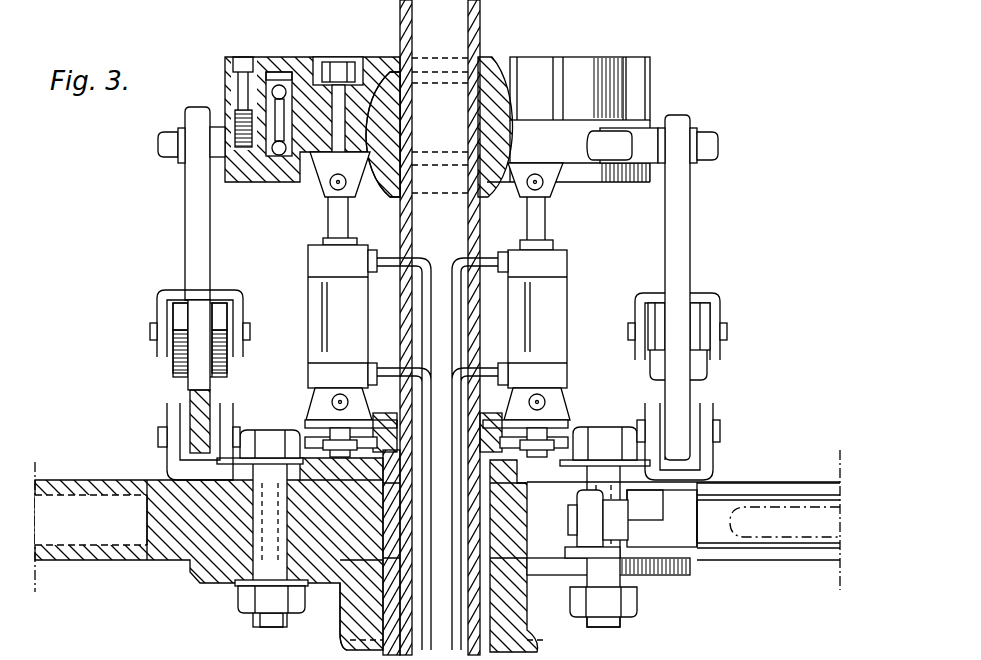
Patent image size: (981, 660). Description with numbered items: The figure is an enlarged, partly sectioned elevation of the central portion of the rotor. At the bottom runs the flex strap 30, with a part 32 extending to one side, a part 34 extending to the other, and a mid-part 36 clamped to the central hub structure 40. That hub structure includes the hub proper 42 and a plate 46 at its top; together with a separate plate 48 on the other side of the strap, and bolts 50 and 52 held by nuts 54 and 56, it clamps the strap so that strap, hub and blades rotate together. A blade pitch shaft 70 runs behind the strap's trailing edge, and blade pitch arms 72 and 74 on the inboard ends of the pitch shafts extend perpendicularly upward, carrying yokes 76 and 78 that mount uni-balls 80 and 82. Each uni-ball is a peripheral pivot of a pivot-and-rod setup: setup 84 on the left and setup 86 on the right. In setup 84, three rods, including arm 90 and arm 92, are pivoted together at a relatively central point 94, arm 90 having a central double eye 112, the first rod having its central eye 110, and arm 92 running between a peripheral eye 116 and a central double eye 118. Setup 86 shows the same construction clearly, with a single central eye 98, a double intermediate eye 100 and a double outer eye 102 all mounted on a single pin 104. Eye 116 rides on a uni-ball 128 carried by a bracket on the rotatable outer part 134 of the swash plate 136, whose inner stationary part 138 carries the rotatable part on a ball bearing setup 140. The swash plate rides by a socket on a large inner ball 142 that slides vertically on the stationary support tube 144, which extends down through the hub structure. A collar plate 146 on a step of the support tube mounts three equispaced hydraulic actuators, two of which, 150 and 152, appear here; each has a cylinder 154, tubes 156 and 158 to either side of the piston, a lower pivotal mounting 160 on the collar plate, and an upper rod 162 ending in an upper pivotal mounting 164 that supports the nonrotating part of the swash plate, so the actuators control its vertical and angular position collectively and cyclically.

The flex strap 30 is at (72, 480).
The flex strap part extending in one direction from the center 32 is at (780, 483).
The flex strap part extending in the other direction from the center 34 is at (93, 562).
The mid-part 36 is at (297, 440).
The central hub structure 40 is at (340, 628).
The hub proper 42 is at (536, 638).
The plate 46 is at (200, 578).
The separate plate 48 is at (565, 468).
The bolt 50 is at (258, 624).
The bolt 52 is at (613, 628).
The nut 54 is at (240, 600).
The nut 56 is at (638, 606).
The blade pitch shaft 70 is at (786, 540).
The blade pitch arm 72 is at (166, 452).
The blade pitch arm 74 is at (718, 464).
The yoke 76 is at (716, 410).
The yoke 78 is at (167, 410).
The uni-ball 80 is at (210, 416).
The uni-ball 82 is at (698, 408).
The pivot-and-rod setup 84 is at (164, 275).
The pivot-and-rod setup 86 is at (730, 282).
The arm 90 is at (190, 378).
The arm 92 is at (184, 205).
The relatively central point 94 is at (150, 330).
The single central eye 98 is at (680, 322).
The double intermediate eye 100 is at (703, 314).
The double outer eye 102 is at (640, 310).
The pin 104 is at (728, 332).
The eye 110 is at (201, 312).
The relatively central double eye 112 is at (221, 312).
The peripheral eye 116 is at (195, 127).
The relatively central double eye 118 is at (160, 299).
The uni-ball 128 is at (214, 165).
The rotatable peripherally outer part 134 is at (233, 58).
The swash plate 136 is at (305, 56).
The inner stationary part 138 is at (380, 76).
The ball bearing setup 140 is at (272, 72).
The large inner ball 142 is at (489, 72).
The stationary support tube 144 is at (483, 26).
The collar plate 146 is at (566, 422).
The hydraulic actuator 150 is at (569, 286).
The hydraulic actuator 152 is at (307, 276).
The cylinder 154 is at (560, 318).
The tube 156 is at (488, 380).
The tube 158 is at (492, 253).
The lower pivotal mounting 160 is at (558, 462).
The upper rod 162 is at (547, 219).
The upper pivotal mounting 164 is at (555, 187).